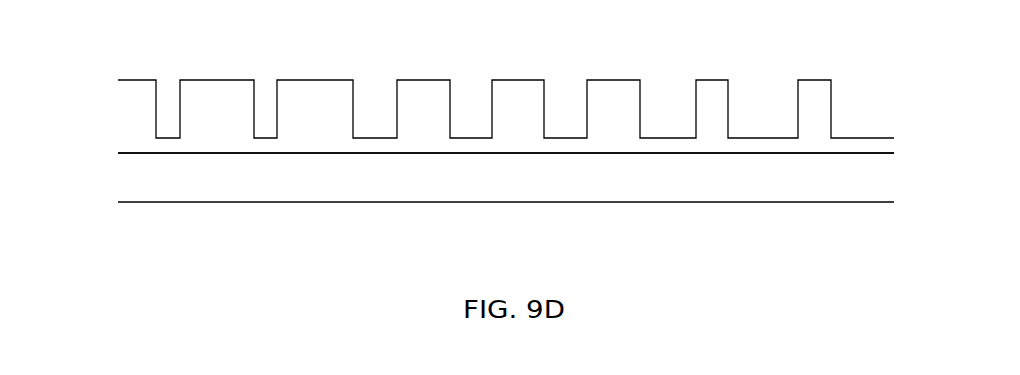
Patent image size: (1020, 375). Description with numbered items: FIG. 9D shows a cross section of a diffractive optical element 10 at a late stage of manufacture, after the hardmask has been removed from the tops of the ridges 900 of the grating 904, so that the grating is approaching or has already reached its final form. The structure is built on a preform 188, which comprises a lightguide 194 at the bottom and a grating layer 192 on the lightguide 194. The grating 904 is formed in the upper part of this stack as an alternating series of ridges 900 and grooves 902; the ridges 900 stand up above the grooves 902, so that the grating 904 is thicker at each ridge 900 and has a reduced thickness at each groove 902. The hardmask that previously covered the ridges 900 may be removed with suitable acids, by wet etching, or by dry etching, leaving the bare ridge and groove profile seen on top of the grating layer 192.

The diffractive optical element 10 is at (245, 241).
The preform 188 is at (108, 83).
The grating layer 192 is at (501, 148).
The lightguide 194 is at (470, 189).
The ridges 900 is at (121, 119).
The grooves 902 is at (526, 46).
The grating 904 is at (908, 73).